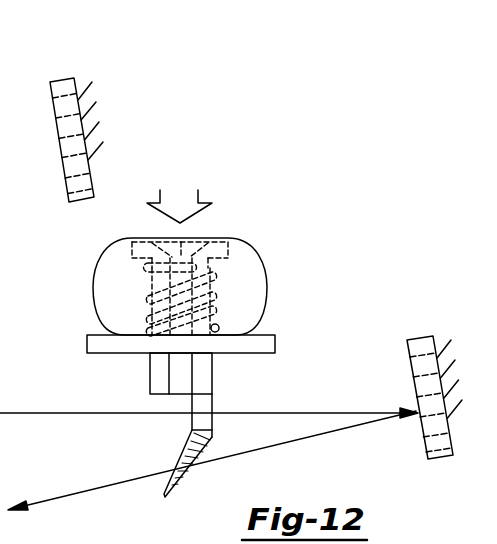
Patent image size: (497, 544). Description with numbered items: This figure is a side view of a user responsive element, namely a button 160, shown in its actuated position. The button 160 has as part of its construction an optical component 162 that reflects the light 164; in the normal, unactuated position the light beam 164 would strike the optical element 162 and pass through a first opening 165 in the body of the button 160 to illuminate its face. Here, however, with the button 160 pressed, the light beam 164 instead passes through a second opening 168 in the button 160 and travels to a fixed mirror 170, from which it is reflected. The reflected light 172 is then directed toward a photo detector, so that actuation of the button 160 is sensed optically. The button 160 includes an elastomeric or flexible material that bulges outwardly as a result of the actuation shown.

The button 160 is at (267, 285).
The optical component 162 is at (164, 494).
The light beam 164 is at (347, 412).
The first opening 165 is at (190, 367).
The second opening 168 is at (205, 405).
The fixed mirror 170 is at (63, 78).
The reflected light 172 is at (106, 488).